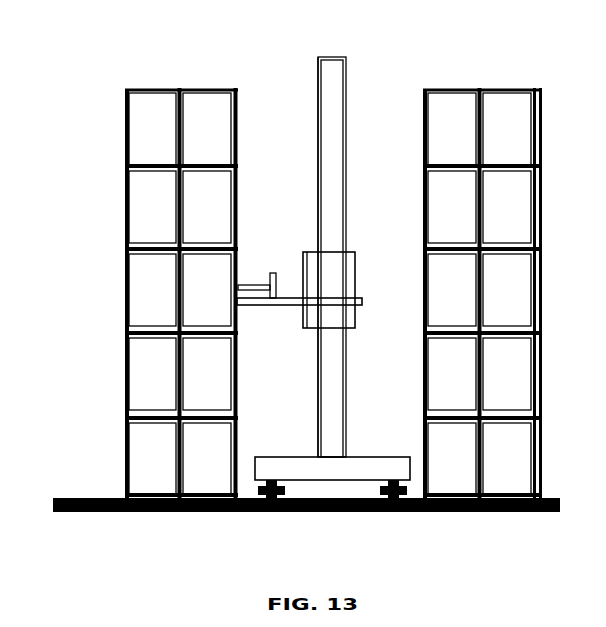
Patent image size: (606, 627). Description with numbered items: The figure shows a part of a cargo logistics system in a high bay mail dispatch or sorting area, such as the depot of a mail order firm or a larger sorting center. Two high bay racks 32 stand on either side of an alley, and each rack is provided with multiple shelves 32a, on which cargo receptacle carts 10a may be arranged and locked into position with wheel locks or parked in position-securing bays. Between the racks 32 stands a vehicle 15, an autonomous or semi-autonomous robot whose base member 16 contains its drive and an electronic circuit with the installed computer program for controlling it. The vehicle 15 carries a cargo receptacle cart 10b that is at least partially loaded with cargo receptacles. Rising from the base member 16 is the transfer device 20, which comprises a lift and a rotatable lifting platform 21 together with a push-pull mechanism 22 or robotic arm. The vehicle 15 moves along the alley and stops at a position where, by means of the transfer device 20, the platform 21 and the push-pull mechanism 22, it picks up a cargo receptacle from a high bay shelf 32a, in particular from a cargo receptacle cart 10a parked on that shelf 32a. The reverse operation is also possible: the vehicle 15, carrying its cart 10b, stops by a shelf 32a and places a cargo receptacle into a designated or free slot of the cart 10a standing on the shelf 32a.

The first cargo receptacle cart 10a is at (206, 87).
The second cargo receptacle cart 10b is at (356, 254).
The vehicle 15 is at (314, 74).
The base member 16 is at (374, 456).
The transfer device 20 is at (317, 191).
The lifting platform 21 is at (298, 296).
The push-pull mechanism 22 is at (261, 307).
The high bay rack 32 is at (124, 208).
The shelf 32a is at (124, 358).